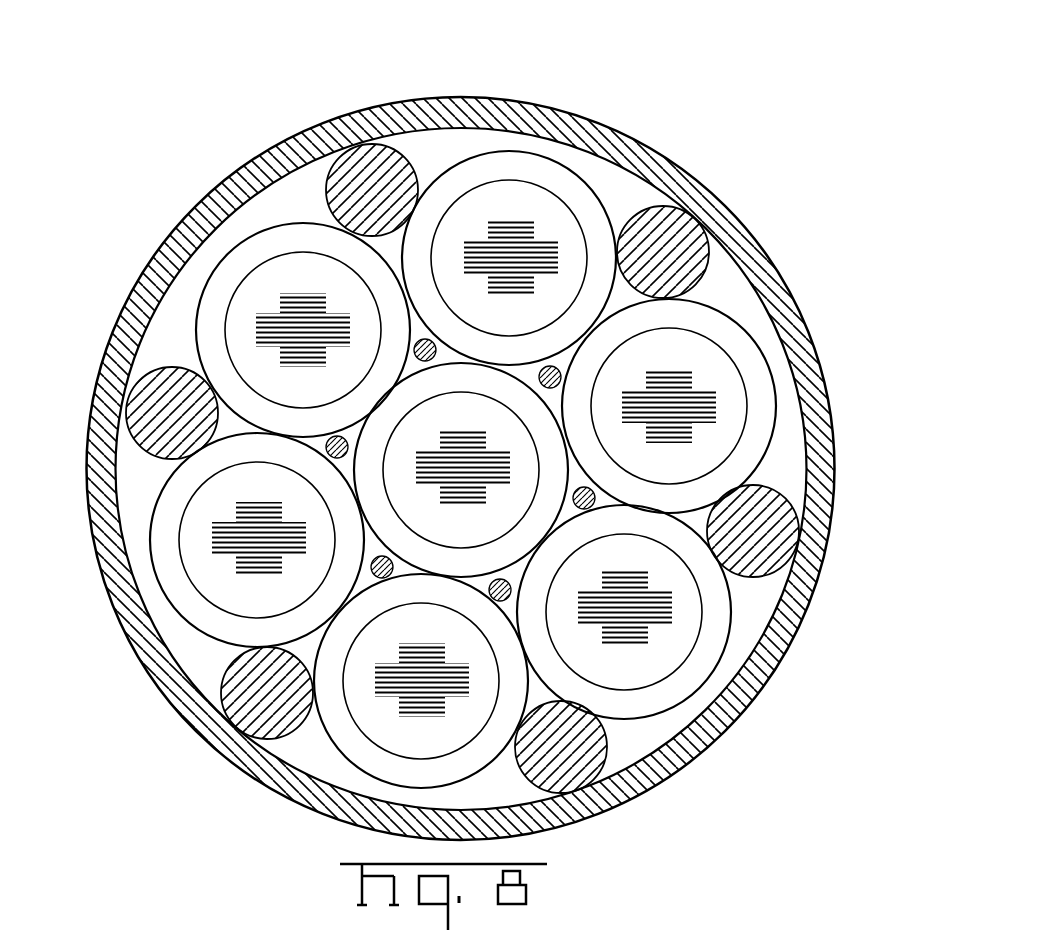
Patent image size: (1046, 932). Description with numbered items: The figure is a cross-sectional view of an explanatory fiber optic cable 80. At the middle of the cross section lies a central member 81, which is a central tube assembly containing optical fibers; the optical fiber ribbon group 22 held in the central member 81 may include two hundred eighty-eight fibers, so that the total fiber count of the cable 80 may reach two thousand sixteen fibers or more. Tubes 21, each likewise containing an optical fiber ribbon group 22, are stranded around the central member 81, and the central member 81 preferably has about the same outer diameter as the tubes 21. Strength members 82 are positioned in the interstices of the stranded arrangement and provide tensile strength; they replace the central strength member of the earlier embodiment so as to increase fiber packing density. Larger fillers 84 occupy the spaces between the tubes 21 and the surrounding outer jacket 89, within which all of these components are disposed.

The tube 21 is at (553, 157).
The optical fiber ribbon group 22 is at (558, 243).
The cable 80 is at (476, 427).
The central member 81 is at (563, 413).
The strength member 82 is at (562, 365).
The filler 84 is at (175, 432).
The outer jacket 89 is at (765, 685).